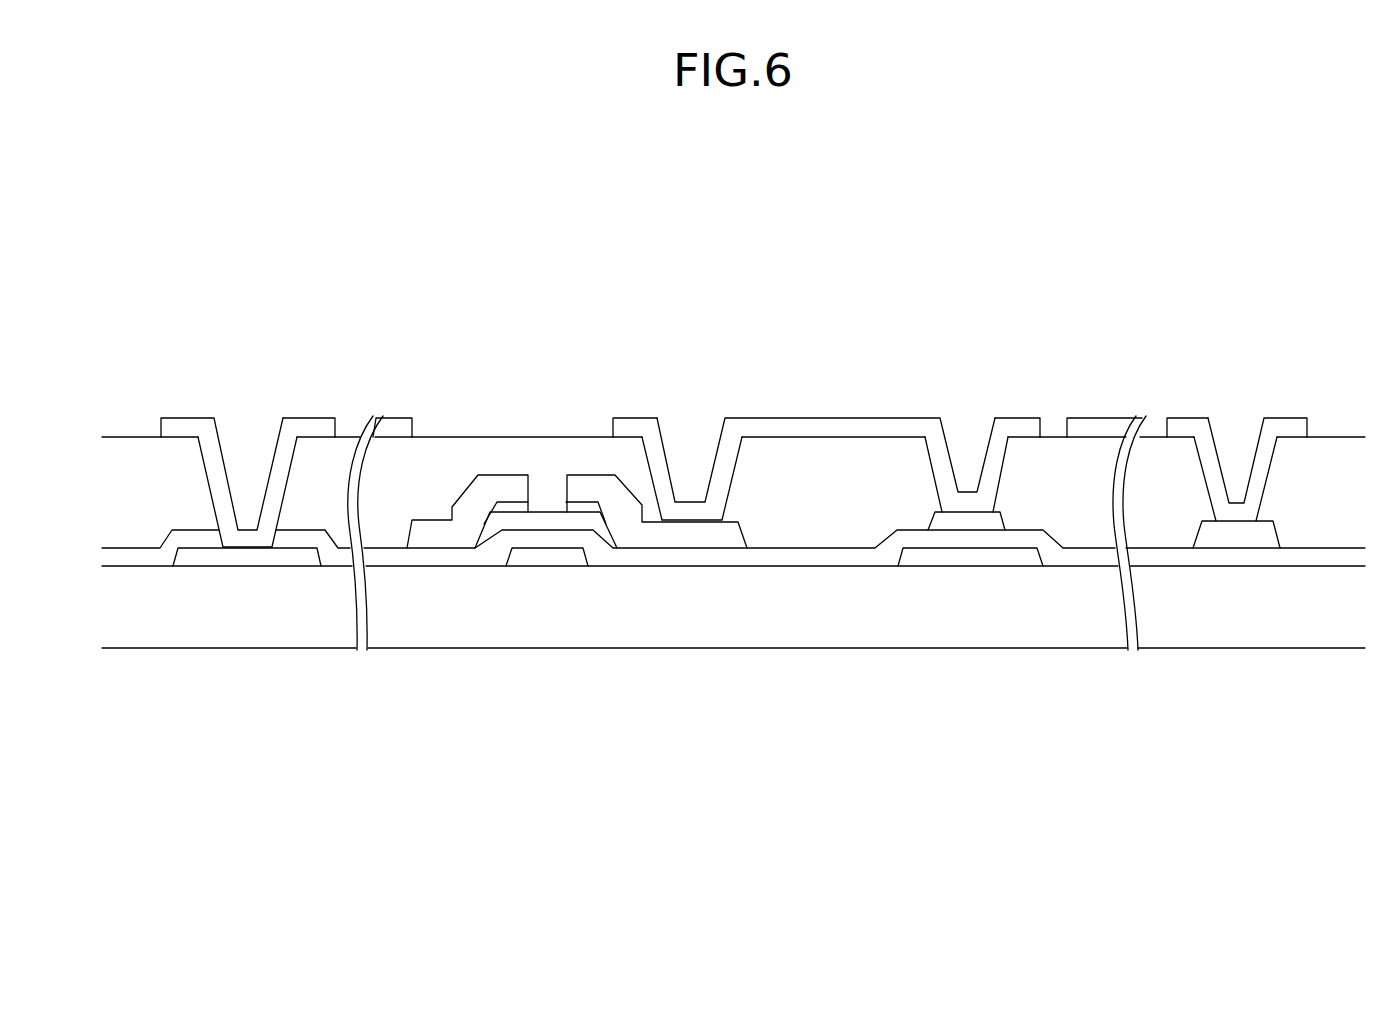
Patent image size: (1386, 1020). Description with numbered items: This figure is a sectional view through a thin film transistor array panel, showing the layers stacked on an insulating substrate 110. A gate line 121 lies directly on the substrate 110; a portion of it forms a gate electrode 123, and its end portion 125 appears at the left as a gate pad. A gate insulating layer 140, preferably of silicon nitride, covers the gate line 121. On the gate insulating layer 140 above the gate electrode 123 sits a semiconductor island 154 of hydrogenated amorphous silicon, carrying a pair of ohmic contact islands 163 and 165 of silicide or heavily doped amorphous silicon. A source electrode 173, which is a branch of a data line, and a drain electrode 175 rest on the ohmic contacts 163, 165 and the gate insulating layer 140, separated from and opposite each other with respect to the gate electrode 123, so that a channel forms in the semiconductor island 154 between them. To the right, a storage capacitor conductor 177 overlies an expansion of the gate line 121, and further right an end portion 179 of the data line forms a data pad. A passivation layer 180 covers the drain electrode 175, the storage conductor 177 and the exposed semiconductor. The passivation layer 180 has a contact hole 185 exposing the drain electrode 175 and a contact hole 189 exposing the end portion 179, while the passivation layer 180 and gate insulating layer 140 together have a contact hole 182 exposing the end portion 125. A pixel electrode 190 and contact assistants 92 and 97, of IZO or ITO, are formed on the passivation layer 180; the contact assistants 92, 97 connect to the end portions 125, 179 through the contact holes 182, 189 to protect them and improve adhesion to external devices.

The contact assistant 92 is at (185, 417).
The contact assistant 97 is at (1292, 423).
The insulating substrate 110 is at (148, 630).
The gate line 121 is at (997, 562).
The gate electrode 123 is at (545, 558).
The end portion of the gate line 125 is at (245, 558).
The gate insulating layer 140 is at (338, 558).
The semiconductor island 154 is at (497, 520).
The ohmic contact island 163 is at (517, 502).
The ohmic contact island 165 is at (580, 505).
The source electrode 173 is at (443, 540).
The drain electrode 175 is at (647, 535).
The storage capacitor conductor 177 is at (950, 520).
The end portion of the data line 179 is at (1240, 538).
The passivation layer 180 is at (137, 450).
The contact hole 182 is at (238, 433).
The contact hole 185 is at (683, 433).
The contact hole 189 is at (1233, 433).
The pixel electrode 190 is at (390, 425).